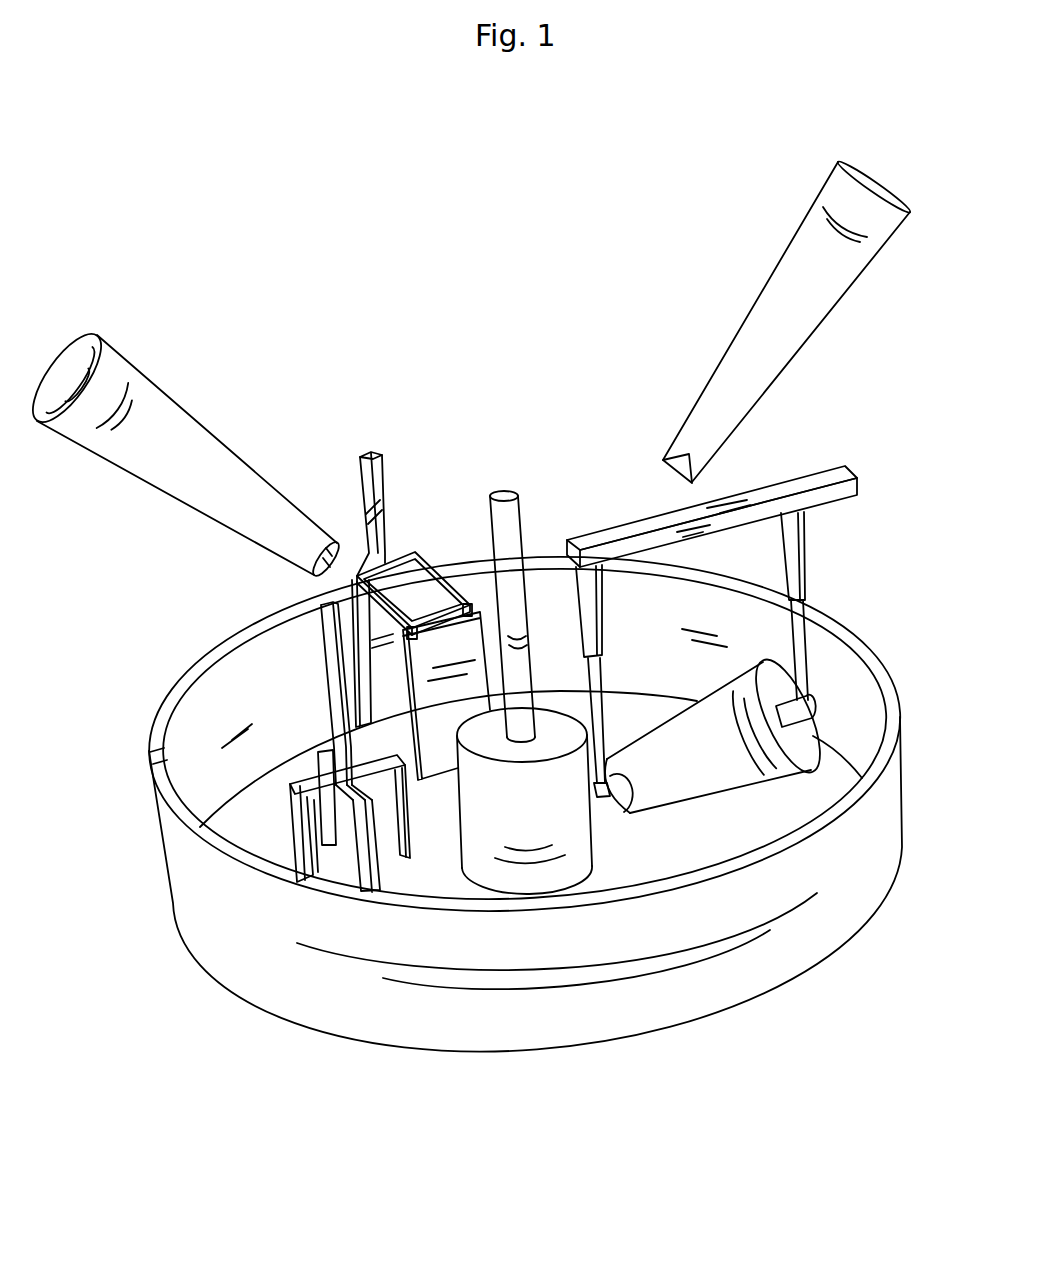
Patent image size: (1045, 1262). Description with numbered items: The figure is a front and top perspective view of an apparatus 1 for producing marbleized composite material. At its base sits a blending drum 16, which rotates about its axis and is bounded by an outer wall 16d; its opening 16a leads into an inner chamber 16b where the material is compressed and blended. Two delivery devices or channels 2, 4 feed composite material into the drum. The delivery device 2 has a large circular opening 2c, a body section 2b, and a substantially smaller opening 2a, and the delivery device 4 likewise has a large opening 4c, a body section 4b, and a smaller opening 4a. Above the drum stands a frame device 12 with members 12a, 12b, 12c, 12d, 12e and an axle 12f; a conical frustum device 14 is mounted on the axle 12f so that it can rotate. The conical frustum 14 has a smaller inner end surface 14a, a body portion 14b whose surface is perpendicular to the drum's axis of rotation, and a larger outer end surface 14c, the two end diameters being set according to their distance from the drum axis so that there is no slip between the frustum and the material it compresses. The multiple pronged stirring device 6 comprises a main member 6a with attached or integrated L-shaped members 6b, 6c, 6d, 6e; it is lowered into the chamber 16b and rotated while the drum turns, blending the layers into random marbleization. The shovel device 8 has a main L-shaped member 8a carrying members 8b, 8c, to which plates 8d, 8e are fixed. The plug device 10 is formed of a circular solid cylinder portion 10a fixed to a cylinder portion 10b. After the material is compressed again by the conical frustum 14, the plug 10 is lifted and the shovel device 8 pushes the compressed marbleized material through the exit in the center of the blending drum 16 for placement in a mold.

The apparatus 1 is at (348, 302).
The delivery device 2 is at (182, 442).
The opening 2a is at (312, 573).
The body section 2b is at (236, 480).
The opening 2c is at (88, 363).
The delivery device 4 is at (766, 304).
The opening 4a is at (662, 468).
The body section 4b is at (800, 257).
The opening 4c is at (880, 185).
The stirring device 6 is at (342, 777).
The main member 6a is at (340, 715).
The L-shaped member 6b is at (303, 838).
The L-shaped member 6c is at (338, 845).
The L-shaped member 6d is at (377, 870).
The L-shaped member 6e is at (410, 843).
The shovel device 8 is at (421, 560).
The main L-shaped member 8a is at (382, 492).
The member 8b is at (383, 580).
The member 8c is at (433, 563).
The plate 8d is at (378, 653).
The plate 8e is at (446, 696).
The plug device 10 is at (536, 643).
The circular solid cylinder portion 10a is at (508, 557).
The cylinder portion 10b is at (524, 801).
The frame device 12 is at (749, 621).
The member 12a is at (833, 495).
The member 12b is at (597, 627).
The member 12c is at (797, 577).
The member 12d is at (600, 687).
The member 12e is at (810, 660).
The axle 12f is at (607, 798).
The conical frustum device 14 is at (719, 750).
The surface 14a is at (625, 810).
The body portion 14b is at (687, 787).
The surface 14c is at (802, 748).
The blending drum 16 is at (485, 820).
The opening 16a is at (204, 724).
The chamber 16b is at (228, 700).
The outer wall 16d is at (307, 1008).